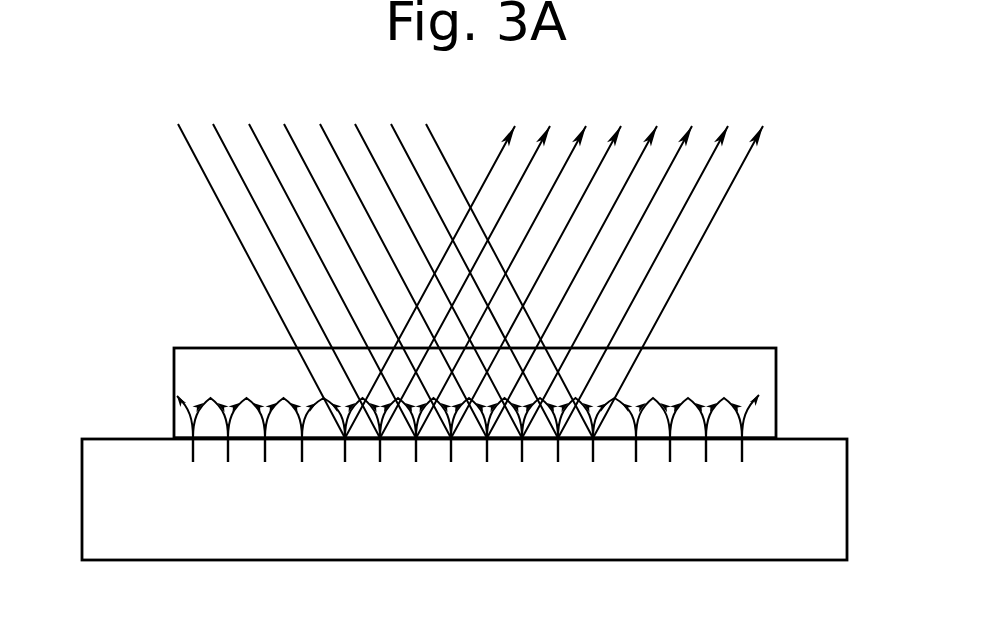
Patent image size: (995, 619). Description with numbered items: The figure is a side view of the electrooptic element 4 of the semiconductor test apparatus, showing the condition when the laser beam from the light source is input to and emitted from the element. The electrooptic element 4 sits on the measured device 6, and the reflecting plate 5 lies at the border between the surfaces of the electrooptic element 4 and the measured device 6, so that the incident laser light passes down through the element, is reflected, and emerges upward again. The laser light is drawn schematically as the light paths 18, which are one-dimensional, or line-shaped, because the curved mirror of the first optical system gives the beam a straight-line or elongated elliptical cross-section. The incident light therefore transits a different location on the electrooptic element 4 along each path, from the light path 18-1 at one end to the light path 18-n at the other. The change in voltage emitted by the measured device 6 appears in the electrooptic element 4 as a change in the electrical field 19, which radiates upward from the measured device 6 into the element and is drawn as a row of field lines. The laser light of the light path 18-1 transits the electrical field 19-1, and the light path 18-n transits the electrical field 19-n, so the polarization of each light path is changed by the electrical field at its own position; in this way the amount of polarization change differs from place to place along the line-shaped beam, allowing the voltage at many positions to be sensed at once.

The electrooptic element 4 is at (183, 370).
The reflecting plate 5 is at (758, 438).
The measured device 6 is at (847, 505).
The light path 18 is at (212, 212).
The light path 18-1 is at (191, 149).
The light path 18-n is at (439, 152).
The electrical field 19 is at (225, 456).
The electrical field 19-1 is at (350, 465).
The electrical field 19-n is at (583, 466).